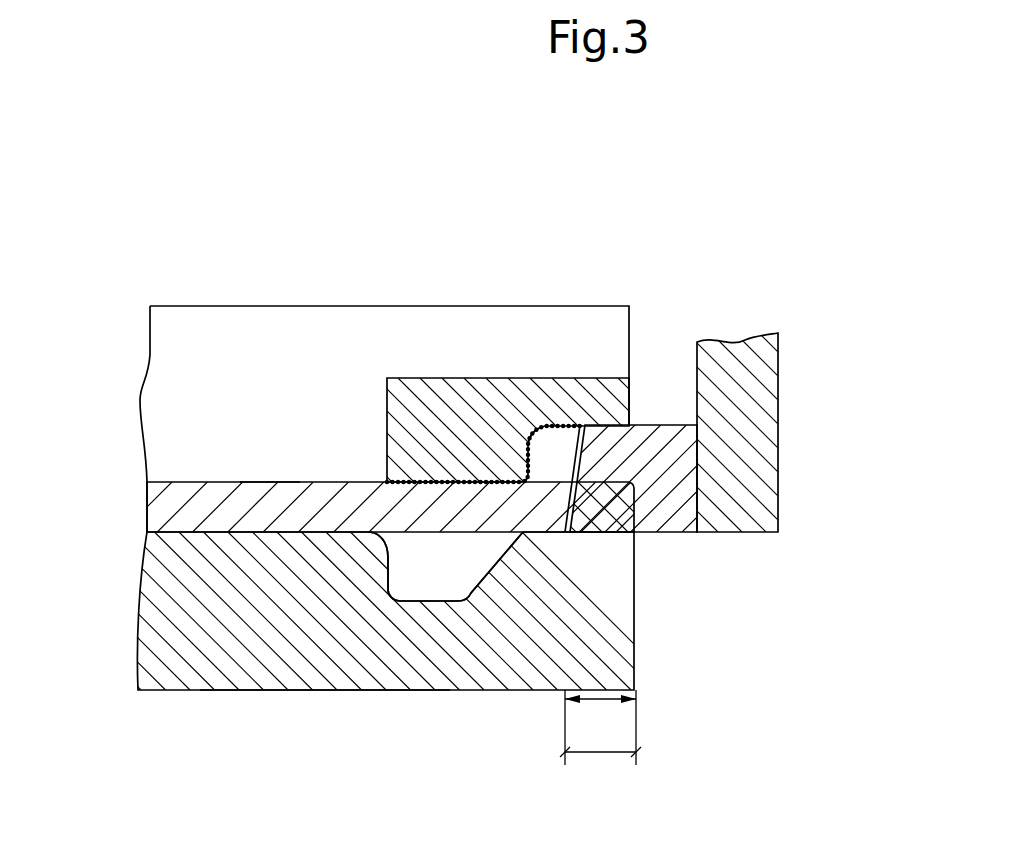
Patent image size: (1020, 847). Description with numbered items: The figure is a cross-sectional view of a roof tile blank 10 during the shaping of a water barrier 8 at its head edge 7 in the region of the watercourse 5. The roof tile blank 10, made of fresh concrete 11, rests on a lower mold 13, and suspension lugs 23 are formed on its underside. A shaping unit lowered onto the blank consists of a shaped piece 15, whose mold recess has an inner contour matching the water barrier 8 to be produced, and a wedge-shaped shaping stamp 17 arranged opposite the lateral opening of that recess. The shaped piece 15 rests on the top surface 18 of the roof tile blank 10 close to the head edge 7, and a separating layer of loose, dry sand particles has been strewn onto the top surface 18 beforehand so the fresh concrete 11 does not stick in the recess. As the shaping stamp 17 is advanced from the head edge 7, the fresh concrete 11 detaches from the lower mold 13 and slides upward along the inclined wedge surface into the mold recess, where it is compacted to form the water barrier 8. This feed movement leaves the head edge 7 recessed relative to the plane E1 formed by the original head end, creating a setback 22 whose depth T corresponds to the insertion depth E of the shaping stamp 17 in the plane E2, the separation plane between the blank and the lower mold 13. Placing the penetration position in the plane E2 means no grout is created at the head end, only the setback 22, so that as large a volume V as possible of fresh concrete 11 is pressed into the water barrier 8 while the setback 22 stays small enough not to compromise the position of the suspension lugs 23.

The roof tile blank 10 is at (124, 279).
The head edge 7 is at (636, 298).
The shaped piece 15 is at (457, 433).
The water barrier 8 is at (550, 447).
The plane E1 is at (627, 306).
The fresh concrete 11 is at (290, 500).
The top surface 18 is at (266, 470).
The watercourse 5 is at (130, 482).
The shaping stamp 17 is at (657, 440).
The volume V is at (622, 516).
The plane E2 is at (147, 532).
The lower mold 13 is at (320, 605).
The suspension lugs 23 is at (427, 578).
The setback 22 is at (600, 752).